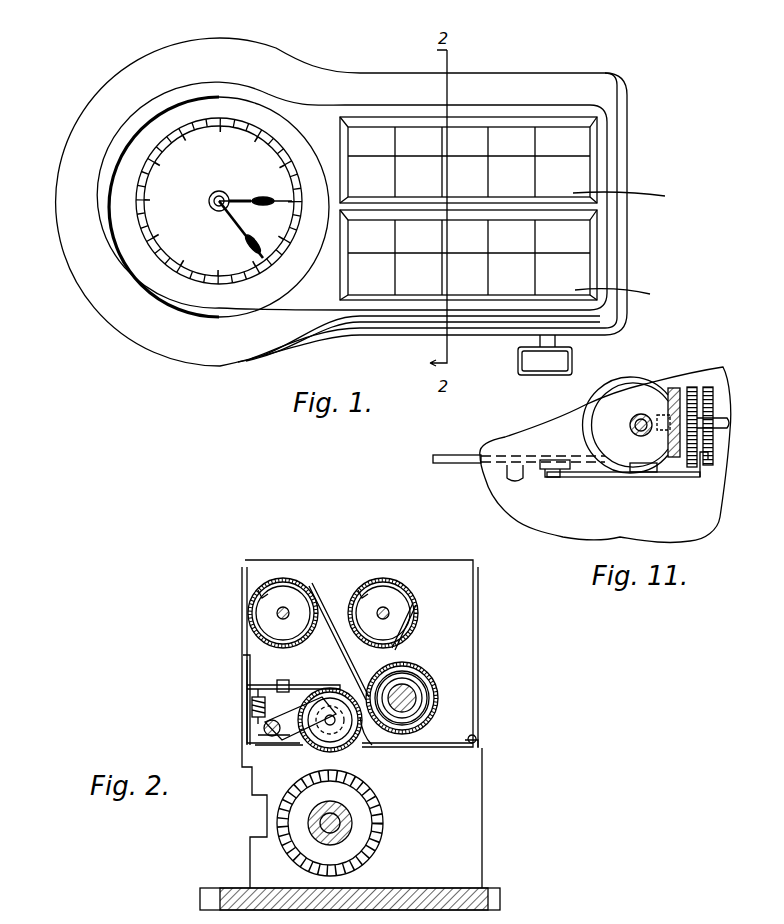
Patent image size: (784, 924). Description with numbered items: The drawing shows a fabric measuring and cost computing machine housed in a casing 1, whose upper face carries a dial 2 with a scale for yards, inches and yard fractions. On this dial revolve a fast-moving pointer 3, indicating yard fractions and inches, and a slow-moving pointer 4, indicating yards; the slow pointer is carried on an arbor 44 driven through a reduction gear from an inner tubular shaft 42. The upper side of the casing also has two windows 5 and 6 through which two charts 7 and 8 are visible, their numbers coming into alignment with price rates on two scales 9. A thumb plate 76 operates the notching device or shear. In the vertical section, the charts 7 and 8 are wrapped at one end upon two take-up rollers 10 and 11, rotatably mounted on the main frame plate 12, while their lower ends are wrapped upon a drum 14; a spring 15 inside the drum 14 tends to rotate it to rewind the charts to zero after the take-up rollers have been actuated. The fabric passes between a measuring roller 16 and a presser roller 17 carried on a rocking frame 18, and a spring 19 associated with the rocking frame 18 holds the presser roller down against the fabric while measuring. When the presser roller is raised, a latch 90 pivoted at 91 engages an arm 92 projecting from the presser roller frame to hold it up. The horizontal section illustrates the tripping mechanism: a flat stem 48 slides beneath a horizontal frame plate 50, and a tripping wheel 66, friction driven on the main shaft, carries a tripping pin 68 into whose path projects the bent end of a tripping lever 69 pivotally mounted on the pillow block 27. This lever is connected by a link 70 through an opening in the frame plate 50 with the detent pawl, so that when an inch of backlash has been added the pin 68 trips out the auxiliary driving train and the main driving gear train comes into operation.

In FIG. 1, the casing 1 is at (195, 364).
In FIG. 1, the dial 2 is at (219, 207).
In FIG. 1, the fast-moving pointer 3 is at (240, 235).
In FIG. 1, the slow-moving pointer 4 is at (257, 199).
In FIG. 1, the window 5 is at (588, 168).
In FIG. 1, the window 6 is at (585, 262).
In FIG. 1, the chart 7 is at (624, 203).
In FIG. 2, the chart 7 is at (382, 667).
In FIG. 1, the chart 8 is at (618, 301).
In FIG. 2, the chart 8 is at (320, 615).
In FIG. 1, the scales 9 is at (575, 133).
In FIG. 1, the thumb plate 76 is at (528, 371).
In FIG. 11, the pillow block 27 is at (617, 436).
In FIG. 11, the inner tubular shaft 42 is at (648, 416).
In FIG. 11, the arbor 44 is at (663, 405).
In FIG. 11, the flat stem 48 is at (481, 456).
In FIG. 11, the horizontal frame plate 50 is at (542, 442).
In FIG. 11, the tripping wheel 66 is at (713, 384).
In FIG. 11, the tripping pin 68 is at (712, 466).
In FIG. 11, the tripping lever 69 is at (660, 478).
In FIG. 11, the link 70 is at (540, 470).
In FIG. 2, the take-up roller 10 is at (418, 605).
In FIG. 2, the take-up roller 11 is at (250, 629).
In FIG. 2, the main frame plate 12 is at (455, 616).
In FIG. 2, the drum 14 is at (437, 694).
In FIG. 2, the spring 15 is at (423, 686).
In FIG. 2, the measuring roller 16 is at (385, 838).
In FIG. 2, the presser roller 17 is at (320, 748).
In FIG. 2, the rocking frame 18 is at (293, 708).
In FIG. 2, the spring 19 is at (252, 707).
In FIG. 2, the latch 90 is at (243, 685).
In FIG. 2, the pivot 91 is at (286, 672).
In FIG. 2, the arm 92 is at (226, 728).